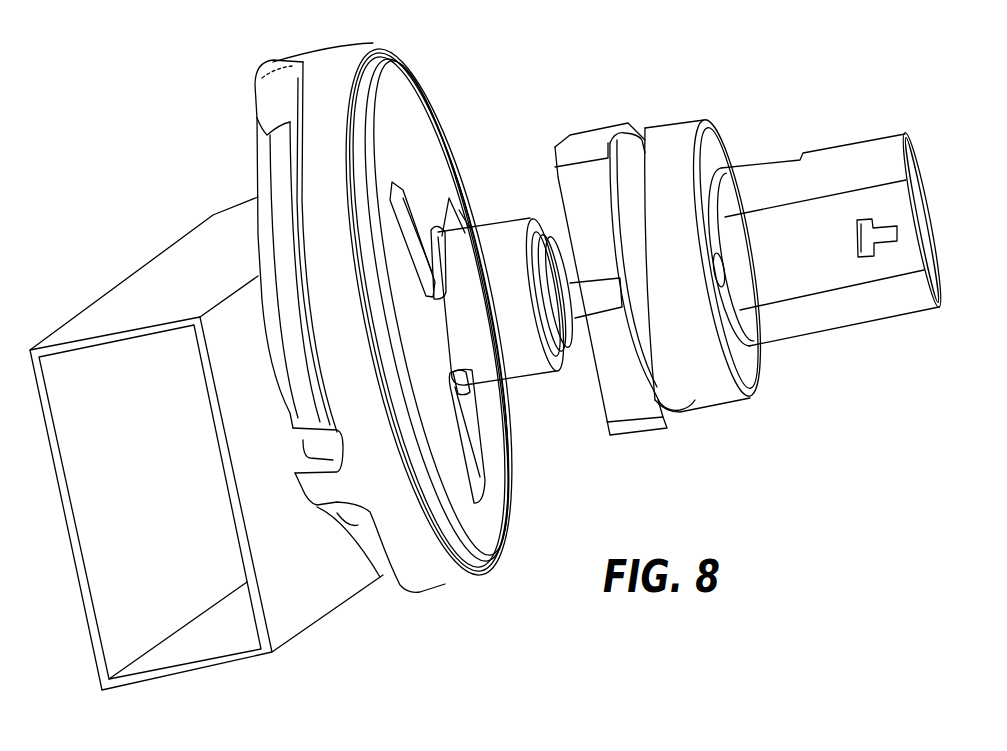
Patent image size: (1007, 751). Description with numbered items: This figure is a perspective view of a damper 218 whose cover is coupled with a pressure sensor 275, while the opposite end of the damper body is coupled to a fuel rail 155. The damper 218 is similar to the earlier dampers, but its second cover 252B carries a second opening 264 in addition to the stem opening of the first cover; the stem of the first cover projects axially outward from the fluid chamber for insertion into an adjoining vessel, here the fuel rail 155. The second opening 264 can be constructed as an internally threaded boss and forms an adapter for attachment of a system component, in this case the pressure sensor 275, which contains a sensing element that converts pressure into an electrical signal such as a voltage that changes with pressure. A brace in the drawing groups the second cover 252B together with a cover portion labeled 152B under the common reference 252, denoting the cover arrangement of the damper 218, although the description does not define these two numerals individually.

The fuel rail 155 is at (168, 278).
The damper 218 is at (347, 374).
The second opening 264 is at (557, 270).
The pressure sensor 275 is at (752, 434).
The housing body 152B is at (425, 570).
The second cover 252B is at (483, 523).
The housing 252 is at (408, 377).